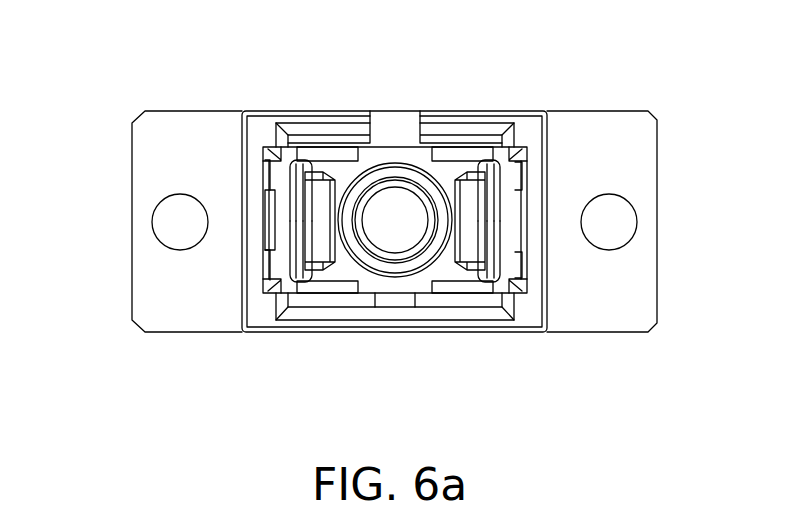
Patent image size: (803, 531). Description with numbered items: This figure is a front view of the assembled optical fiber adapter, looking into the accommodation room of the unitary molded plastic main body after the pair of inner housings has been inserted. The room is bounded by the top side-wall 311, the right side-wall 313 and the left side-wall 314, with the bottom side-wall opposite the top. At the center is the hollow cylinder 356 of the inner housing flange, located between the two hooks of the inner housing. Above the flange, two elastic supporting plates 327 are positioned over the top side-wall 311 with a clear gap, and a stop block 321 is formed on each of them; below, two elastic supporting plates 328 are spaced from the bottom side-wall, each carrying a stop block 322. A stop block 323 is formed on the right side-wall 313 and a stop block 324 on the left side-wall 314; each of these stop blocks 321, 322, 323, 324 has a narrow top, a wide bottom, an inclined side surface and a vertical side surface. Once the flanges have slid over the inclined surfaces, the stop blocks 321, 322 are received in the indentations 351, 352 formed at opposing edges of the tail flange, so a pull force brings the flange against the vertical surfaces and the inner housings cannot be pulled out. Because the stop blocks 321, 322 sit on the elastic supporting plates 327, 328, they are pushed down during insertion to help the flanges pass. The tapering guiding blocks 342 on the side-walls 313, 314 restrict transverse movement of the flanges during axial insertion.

The top side-wall 311 is at (365, 117).
The right side-wall 313 is at (528, 135).
The left side-wall 314 is at (258, 302).
The stop block 321 is at (338, 146).
The stop block 322 is at (318, 292).
The stop block 323 is at (522, 183).
The stop block 324 is at (266, 223).
The elastic supporting plate 327 is at (305, 148).
The elastic supporting plate 328 is at (307, 295).
The guiding block 342 is at (278, 152).
The indentation 351 is at (320, 158).
The indentation 352 is at (325, 283).
The hollow cylinder 356 is at (395, 267).